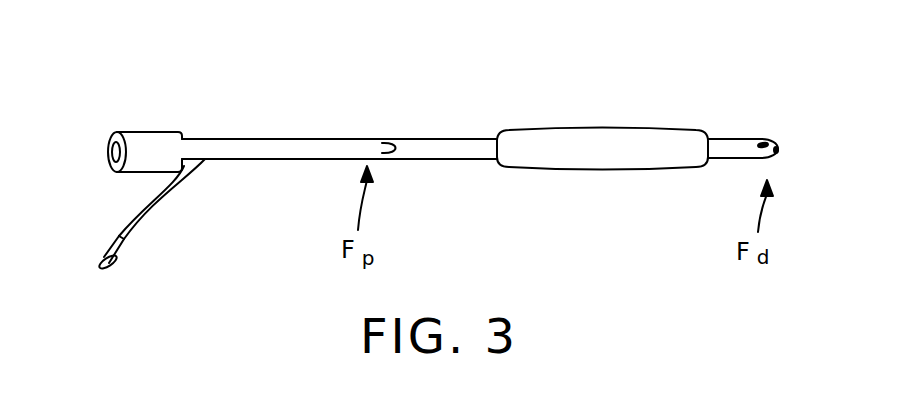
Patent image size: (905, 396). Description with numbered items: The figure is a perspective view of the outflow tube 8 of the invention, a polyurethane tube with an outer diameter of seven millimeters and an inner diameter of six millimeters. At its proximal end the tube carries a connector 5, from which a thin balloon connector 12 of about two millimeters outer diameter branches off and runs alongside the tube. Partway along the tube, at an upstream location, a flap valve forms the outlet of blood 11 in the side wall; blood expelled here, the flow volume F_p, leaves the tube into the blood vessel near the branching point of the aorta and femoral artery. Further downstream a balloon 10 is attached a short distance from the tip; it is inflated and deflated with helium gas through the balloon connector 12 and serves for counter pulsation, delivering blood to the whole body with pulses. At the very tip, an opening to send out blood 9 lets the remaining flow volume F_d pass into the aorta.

The connector 5 is at (150, 131).
The outflow tube 8 is at (345, 138).
The outlet of blood 11 is at (396, 139).
The balloon 10 is at (613, 128).
The balloon connector 12 is at (158, 202).
The opening to send out blood 9 is at (760, 158).